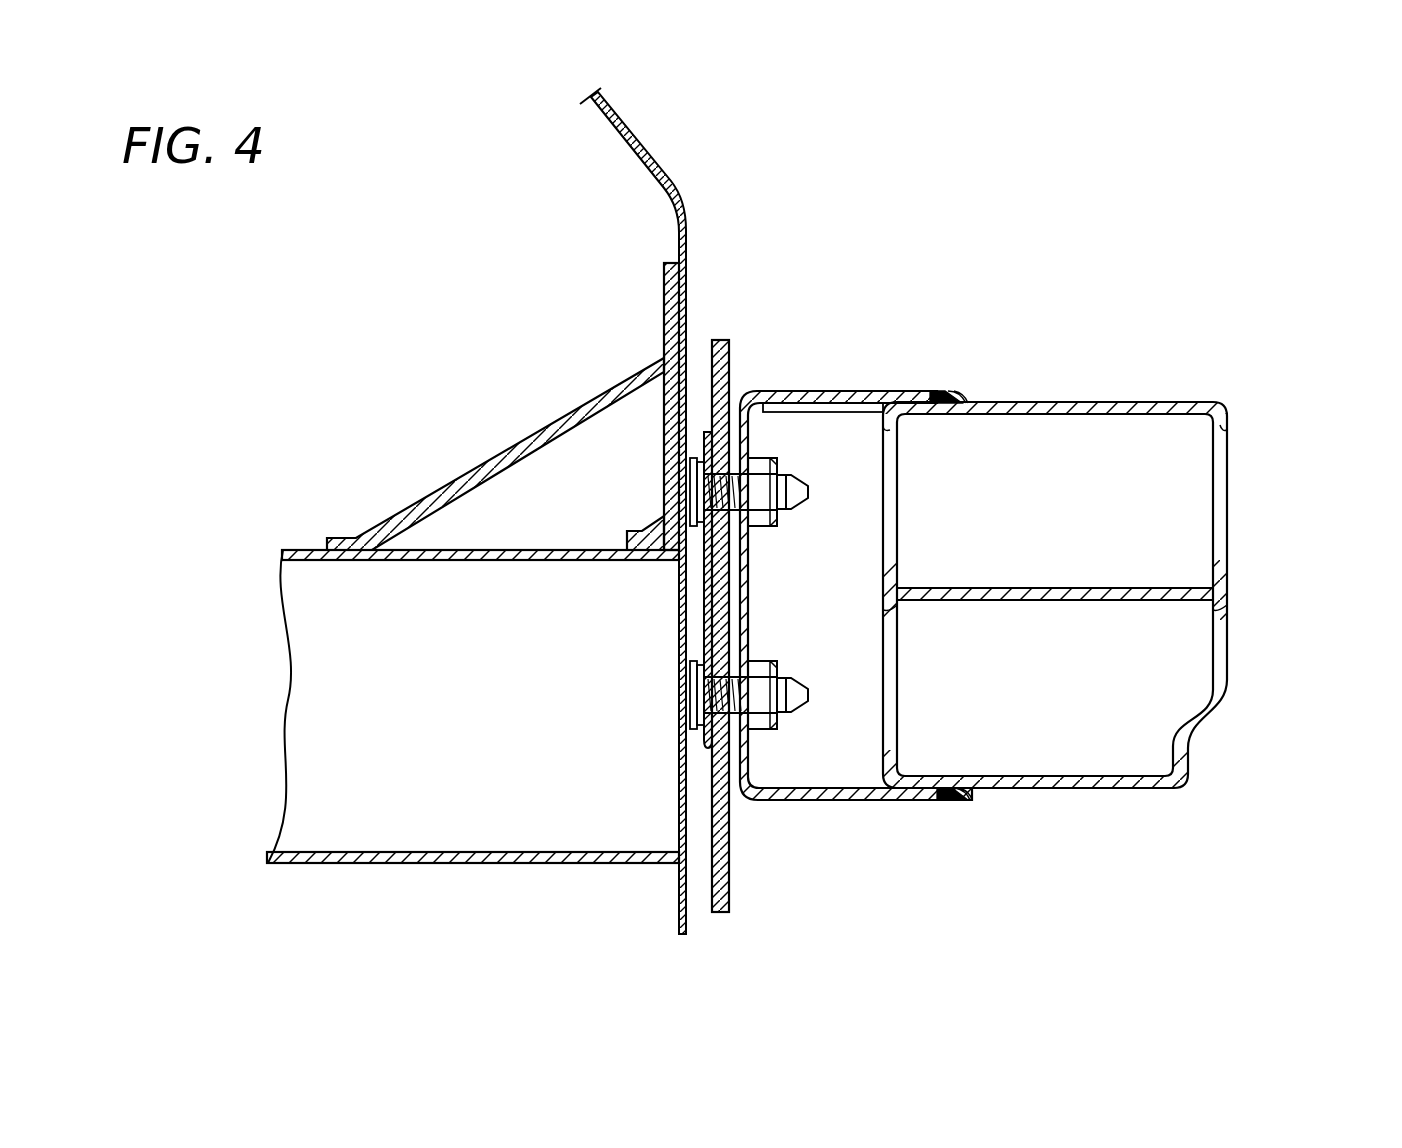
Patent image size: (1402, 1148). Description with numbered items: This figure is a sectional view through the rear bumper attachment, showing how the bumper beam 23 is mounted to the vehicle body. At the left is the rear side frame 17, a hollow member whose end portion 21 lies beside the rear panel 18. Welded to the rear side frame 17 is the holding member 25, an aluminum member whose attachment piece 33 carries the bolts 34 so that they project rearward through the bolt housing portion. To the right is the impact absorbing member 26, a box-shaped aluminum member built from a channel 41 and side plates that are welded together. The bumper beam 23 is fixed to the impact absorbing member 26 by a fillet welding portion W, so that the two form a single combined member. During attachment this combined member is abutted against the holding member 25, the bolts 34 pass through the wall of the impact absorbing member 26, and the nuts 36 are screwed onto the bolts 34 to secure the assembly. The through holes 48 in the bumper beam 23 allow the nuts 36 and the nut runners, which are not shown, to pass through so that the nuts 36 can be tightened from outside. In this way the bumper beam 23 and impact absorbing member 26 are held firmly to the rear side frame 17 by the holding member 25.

The rear side frame 17 is at (232, 750).
The rear panel 18 is at (688, 265).
The end portion 21 is at (578, 863).
The bumper beam 23 is at (1053, 402).
The holding member 25 is at (752, 331).
The impact absorbing member 26 is at (878, 362).
The attachment piece 33 is at (717, 803).
The bolt 34 is at (798, 482).
The nut 36 is at (760, 456).
The channel 41 is at (912, 390).
The through hole 48 is at (888, 425).
The fillet welding portion W is at (960, 392).